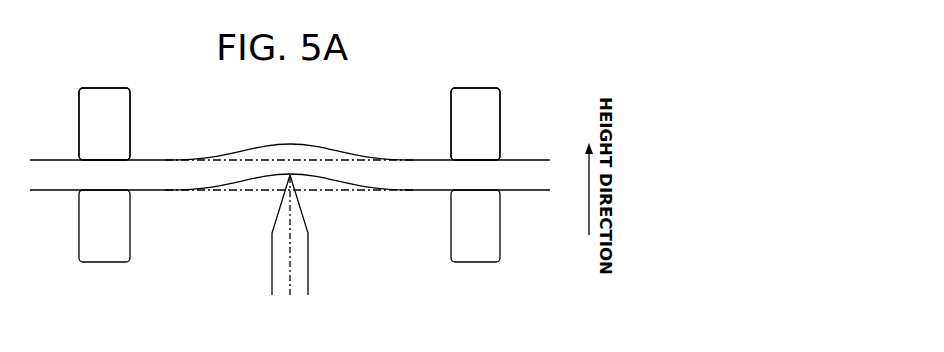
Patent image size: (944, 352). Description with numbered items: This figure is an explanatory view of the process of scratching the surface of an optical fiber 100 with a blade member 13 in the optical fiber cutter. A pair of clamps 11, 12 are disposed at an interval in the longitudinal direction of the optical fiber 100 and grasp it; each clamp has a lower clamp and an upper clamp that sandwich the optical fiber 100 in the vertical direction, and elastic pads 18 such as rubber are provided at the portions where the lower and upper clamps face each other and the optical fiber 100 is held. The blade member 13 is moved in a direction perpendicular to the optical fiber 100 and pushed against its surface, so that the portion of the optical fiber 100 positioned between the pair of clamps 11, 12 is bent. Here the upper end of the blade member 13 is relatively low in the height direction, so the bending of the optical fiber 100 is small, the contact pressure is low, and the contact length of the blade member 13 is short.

The optical fiber 100 is at (525, 162).
The clamp 11 is at (119, 80).
The clamp 12 is at (466, 78).
The blade member 13 is at (320, 266).
The elastic pads 18 is at (528, 285).